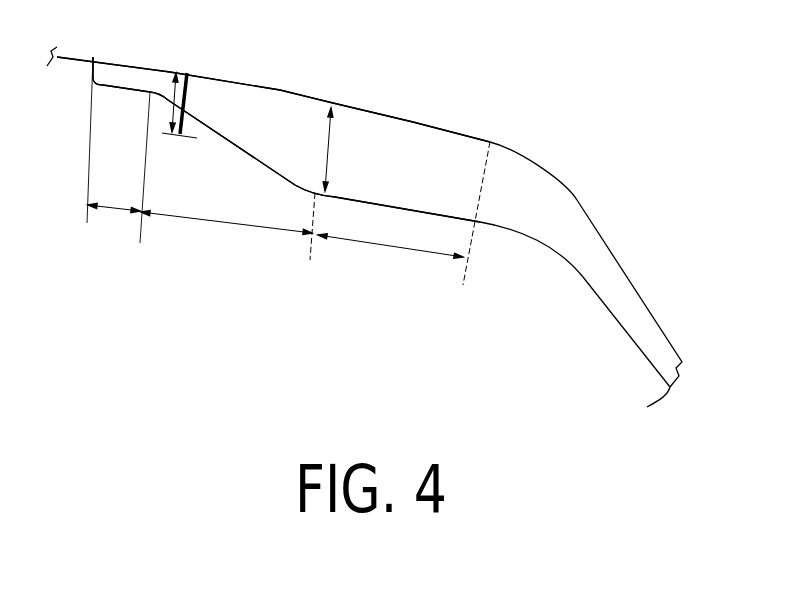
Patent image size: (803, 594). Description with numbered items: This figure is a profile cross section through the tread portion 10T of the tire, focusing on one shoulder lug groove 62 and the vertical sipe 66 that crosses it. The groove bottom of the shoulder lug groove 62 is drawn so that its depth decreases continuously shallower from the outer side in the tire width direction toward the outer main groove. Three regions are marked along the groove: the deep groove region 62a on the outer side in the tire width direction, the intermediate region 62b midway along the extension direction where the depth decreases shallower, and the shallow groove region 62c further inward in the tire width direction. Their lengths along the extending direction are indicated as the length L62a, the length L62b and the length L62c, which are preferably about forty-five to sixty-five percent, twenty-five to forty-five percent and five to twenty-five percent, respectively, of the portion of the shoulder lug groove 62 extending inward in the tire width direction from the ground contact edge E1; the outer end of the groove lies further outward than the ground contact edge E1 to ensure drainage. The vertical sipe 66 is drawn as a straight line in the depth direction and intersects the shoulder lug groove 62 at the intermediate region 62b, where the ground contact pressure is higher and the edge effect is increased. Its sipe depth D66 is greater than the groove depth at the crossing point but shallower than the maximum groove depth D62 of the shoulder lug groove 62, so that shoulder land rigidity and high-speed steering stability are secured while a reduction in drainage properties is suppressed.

The tread portion 10T is at (533, 91).
The shoulder lug groove 62 is at (615, 275).
The shallow groove region 62c is at (130, 53).
The intermediate region 62b is at (293, 106).
The deep groove region 62a is at (435, 110).
The vertical sipe 66 is at (193, 77).
The ground contact edge E1 is at (497, 141).
The sipe depth D66 is at (175, 70).
The maximum groove depth D62 is at (382, 149).
The length of shallow groove region L62c is at (103, 167).
The length of intermediate region L62b is at (228, 227).
The length of deep groove region L62a is at (389, 258).